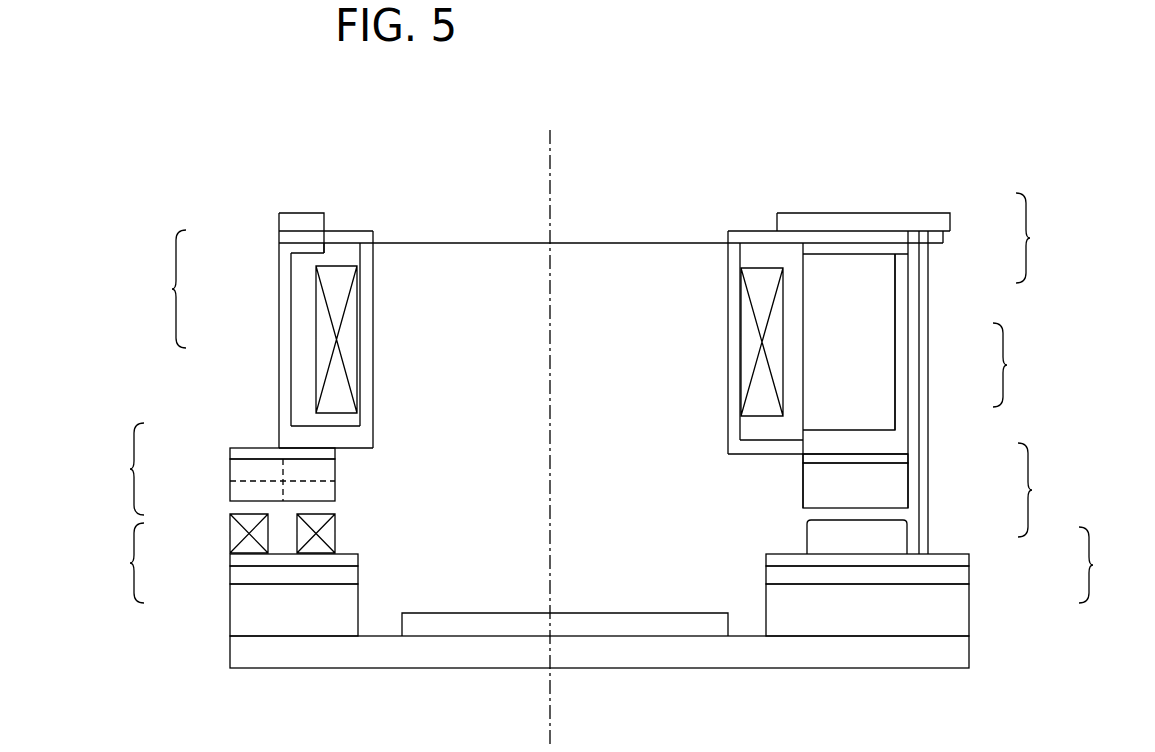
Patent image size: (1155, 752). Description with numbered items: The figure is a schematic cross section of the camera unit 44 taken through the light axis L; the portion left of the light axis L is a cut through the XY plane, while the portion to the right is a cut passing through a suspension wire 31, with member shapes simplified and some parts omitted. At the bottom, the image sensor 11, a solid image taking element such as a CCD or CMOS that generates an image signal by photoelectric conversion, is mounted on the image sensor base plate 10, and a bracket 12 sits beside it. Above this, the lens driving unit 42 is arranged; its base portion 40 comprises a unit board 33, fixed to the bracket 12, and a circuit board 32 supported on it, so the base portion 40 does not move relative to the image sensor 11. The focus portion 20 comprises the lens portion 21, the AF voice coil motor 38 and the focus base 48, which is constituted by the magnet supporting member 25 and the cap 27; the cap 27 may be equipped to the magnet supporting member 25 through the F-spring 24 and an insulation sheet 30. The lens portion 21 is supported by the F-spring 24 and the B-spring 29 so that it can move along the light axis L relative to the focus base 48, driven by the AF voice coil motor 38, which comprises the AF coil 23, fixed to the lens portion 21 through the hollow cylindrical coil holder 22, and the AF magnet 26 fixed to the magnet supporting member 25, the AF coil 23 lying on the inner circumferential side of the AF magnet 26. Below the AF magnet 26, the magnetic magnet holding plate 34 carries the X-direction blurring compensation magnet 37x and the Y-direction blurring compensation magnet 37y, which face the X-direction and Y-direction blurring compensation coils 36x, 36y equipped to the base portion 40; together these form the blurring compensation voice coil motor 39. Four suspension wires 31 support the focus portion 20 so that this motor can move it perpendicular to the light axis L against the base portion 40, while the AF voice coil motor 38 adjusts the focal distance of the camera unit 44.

The image sensor base plate 10 is at (238, 650).
The image sensor 11 is at (471, 630).
The bracket 12 is at (243, 615).
The focus portion 20 is at (245, 189).
The lens portion 21 is at (464, 253).
The coil holder 22 is at (372, 257).
The AF coil 23 is at (342, 266).
The F-spring 24 is at (305, 233).
The magnet supporting member 25 is at (283, 300).
The AF magnet 26 is at (885, 393).
The cap 27 is at (290, 224).
The B-spring 29 is at (313, 440).
The insulation sheet 30 is at (308, 252).
The suspension wire 31 is at (928, 297).
The circuit board 32 is at (237, 563).
The unit board 33 is at (238, 574).
The magnet holding plate 34 is at (257, 450).
The X-direction blurring compensation coil 36x is at (236, 532).
The Y-direction blurring compensation coil 36y is at (900, 538).
The X-direction blurring compensation magnet 37x is at (237, 473).
The Y-direction blurring compensation magnet 37y is at (900, 492).
The AF voice coil motor 38 is at (1022, 365).
The blurring compensation voice coil motor 39 is at (578, 480).
The base portion 40 is at (609, 563).
The lens driving unit 42 is at (324, 162).
The camera unit 44 is at (260, 157).
The focus base 48 is at (600, 270).
The light axis L is at (552, 165).